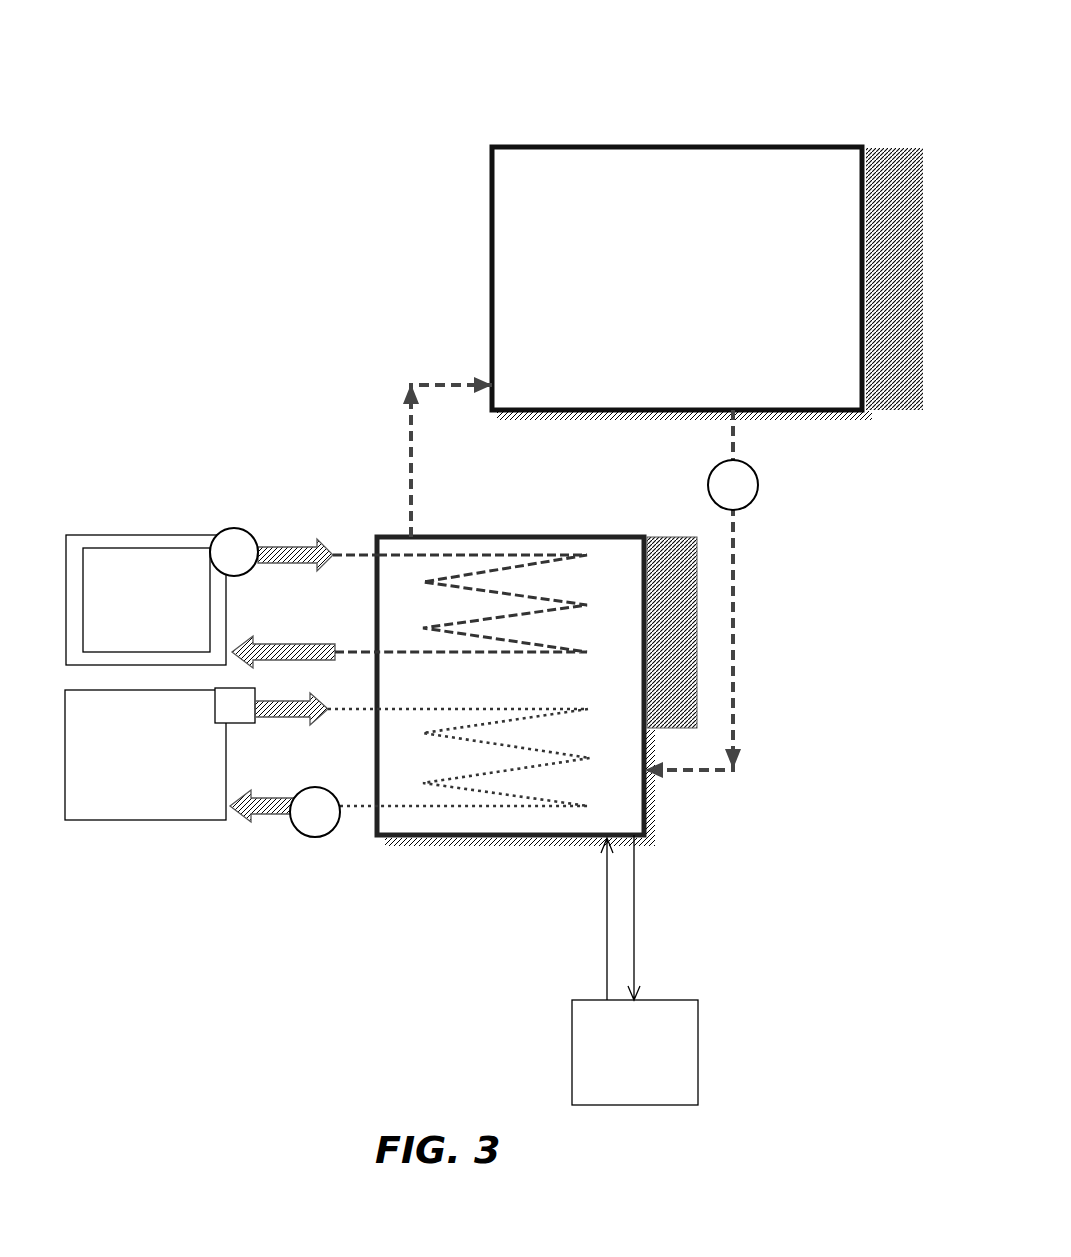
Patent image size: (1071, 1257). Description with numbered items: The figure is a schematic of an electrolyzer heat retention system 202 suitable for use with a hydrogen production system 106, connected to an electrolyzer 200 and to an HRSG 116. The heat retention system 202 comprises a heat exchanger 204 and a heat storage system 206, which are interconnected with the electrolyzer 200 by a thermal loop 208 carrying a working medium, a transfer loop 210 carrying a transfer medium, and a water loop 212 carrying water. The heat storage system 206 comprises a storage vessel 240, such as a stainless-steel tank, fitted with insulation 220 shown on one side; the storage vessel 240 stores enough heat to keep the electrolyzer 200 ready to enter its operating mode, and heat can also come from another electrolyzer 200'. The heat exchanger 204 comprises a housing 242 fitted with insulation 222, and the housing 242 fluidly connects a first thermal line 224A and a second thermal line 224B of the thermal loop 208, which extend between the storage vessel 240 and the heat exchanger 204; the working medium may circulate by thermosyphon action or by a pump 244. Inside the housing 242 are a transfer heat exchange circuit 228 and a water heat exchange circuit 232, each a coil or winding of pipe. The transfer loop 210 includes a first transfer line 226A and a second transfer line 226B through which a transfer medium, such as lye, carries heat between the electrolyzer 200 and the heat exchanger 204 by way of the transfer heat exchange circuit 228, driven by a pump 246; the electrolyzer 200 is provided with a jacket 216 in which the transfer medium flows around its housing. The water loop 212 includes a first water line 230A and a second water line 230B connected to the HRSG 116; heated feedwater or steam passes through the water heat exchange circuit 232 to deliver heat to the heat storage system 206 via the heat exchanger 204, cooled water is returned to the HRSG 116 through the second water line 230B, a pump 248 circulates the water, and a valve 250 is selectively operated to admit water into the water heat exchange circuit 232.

The hydrogen production system 106 is at (418, 308).
The HRSG 116 is at (145, 820).
The electrolyzer 200 is at (146, 560).
The electrolyzer 200' is at (675, 970).
The electrolyzer heat retention system 202 is at (383, 372).
The heat exchanger 204 is at (522, 850).
The heat storage system 206 is at (515, 135).
The thermal loop 208 is at (746, 737).
The transfer loop 210 is at (490, 545).
The water loop 212 is at (431, 822).
The jacket 216 is at (110, 535).
The insulation 220 is at (880, 150).
The insulation 222 is at (668, 663).
The first thermal line 224A is at (735, 583).
The second thermal line 224B is at (405, 430).
The first transfer line 226A is at (358, 652).
The second transfer line 226B is at (355, 555).
The transfer heat exchange circuit 228 is at (575, 617).
The first water line 230A is at (352, 710).
The second water line 230B is at (358, 815).
The water heat exchange circuit 232 is at (593, 776).
The storage vessel 240 is at (735, 146).
The housing 242 is at (488, 836).
The pump 244 is at (760, 483).
The pump 246 is at (230, 527).
The pump 248 is at (298, 832).
The valve 250 is at (232, 700).